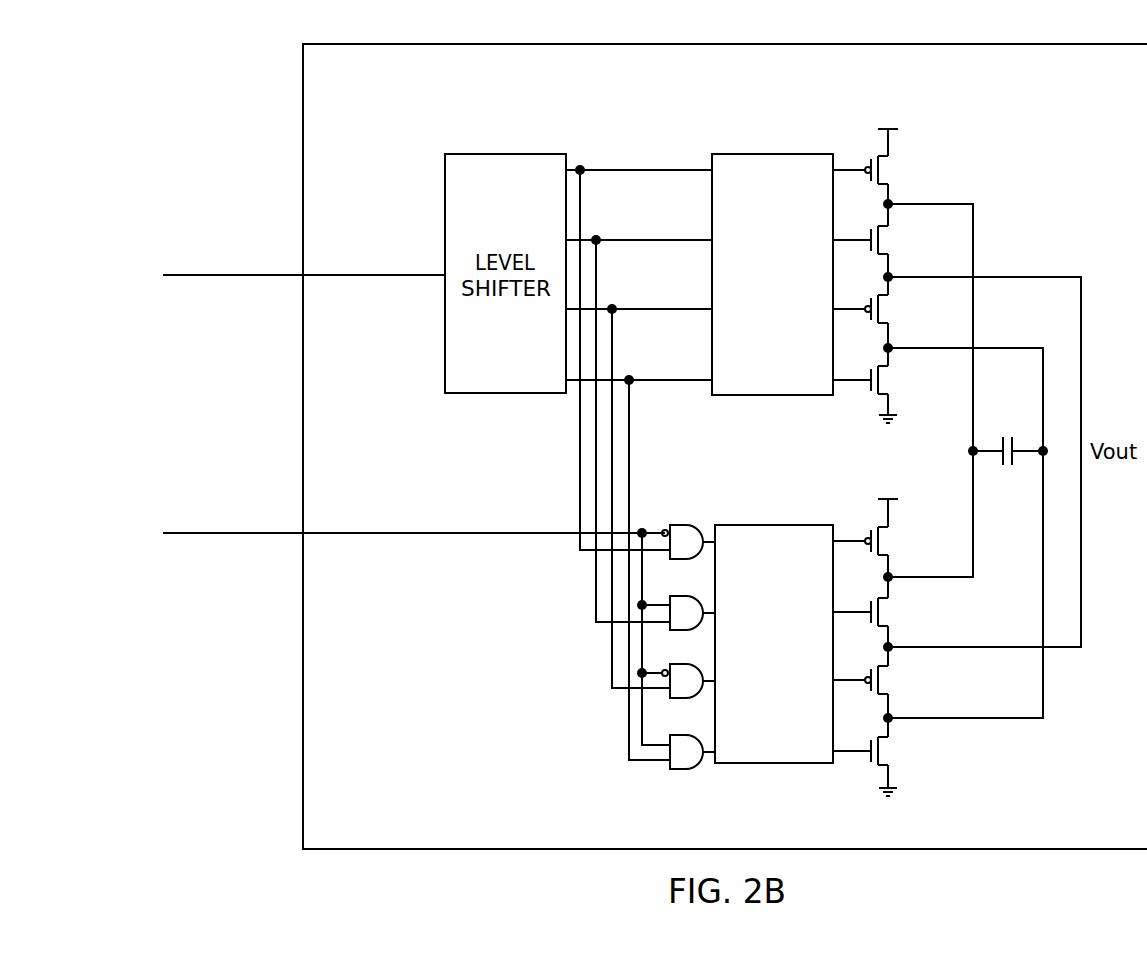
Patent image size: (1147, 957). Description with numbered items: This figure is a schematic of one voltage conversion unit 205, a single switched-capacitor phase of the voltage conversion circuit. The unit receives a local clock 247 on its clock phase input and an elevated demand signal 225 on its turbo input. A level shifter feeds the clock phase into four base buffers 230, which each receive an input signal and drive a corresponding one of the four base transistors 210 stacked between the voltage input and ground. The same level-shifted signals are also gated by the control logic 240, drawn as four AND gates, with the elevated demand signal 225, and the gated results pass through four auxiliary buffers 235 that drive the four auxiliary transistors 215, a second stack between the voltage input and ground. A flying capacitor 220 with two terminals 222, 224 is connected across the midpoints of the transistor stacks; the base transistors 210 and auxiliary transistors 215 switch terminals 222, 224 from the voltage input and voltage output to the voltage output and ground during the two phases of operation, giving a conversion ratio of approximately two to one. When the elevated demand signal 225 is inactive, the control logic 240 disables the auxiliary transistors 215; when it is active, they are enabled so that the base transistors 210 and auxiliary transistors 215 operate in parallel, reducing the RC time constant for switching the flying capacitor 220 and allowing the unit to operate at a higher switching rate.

The voltage conversion unit 205 is at (714, 111).
The base transistors 210 is at (990, 150).
The auxiliary transistors 215 is at (937, 769).
The flying capacitor 220 is at (1008, 465).
The terminal 222 is at (987, 449).
The terminal 224 is at (1025, 449).
The elevated demand signal 225 is at (433, 535).
The base buffers 230 is at (795, 345).
The auxiliary buffers 235 is at (797, 713).
The control logic 240 is at (590, 661).
The local clock 247 is at (368, 278).